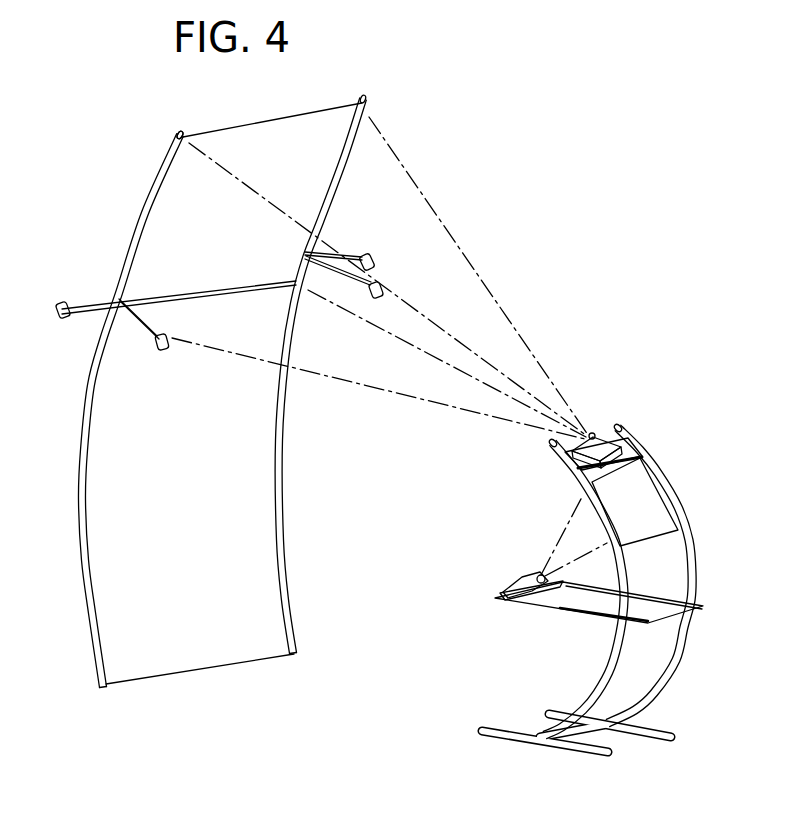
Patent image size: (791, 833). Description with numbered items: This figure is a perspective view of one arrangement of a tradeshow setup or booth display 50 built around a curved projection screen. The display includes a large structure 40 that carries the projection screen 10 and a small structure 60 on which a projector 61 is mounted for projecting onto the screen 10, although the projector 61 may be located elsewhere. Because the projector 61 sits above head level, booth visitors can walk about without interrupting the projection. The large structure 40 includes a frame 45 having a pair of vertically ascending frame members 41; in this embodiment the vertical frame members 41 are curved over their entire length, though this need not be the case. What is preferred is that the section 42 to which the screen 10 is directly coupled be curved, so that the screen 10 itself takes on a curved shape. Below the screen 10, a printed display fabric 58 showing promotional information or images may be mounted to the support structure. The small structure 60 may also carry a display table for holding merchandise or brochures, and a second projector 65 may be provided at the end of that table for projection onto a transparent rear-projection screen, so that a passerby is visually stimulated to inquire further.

The projection screen 10 is at (241, 236).
The large structure 40 is at (400, 75).
The vertically ascending frame members 41 is at (283, 437).
The section 42 is at (137, 145).
The frame 45 is at (150, 150).
The tradeshow setup or booth display 50 is at (534, 156).
The printed display fabric 58 is at (200, 472).
The small structure 60 is at (654, 420).
The projector 61 is at (601, 437).
The second projector 65 is at (513, 588).